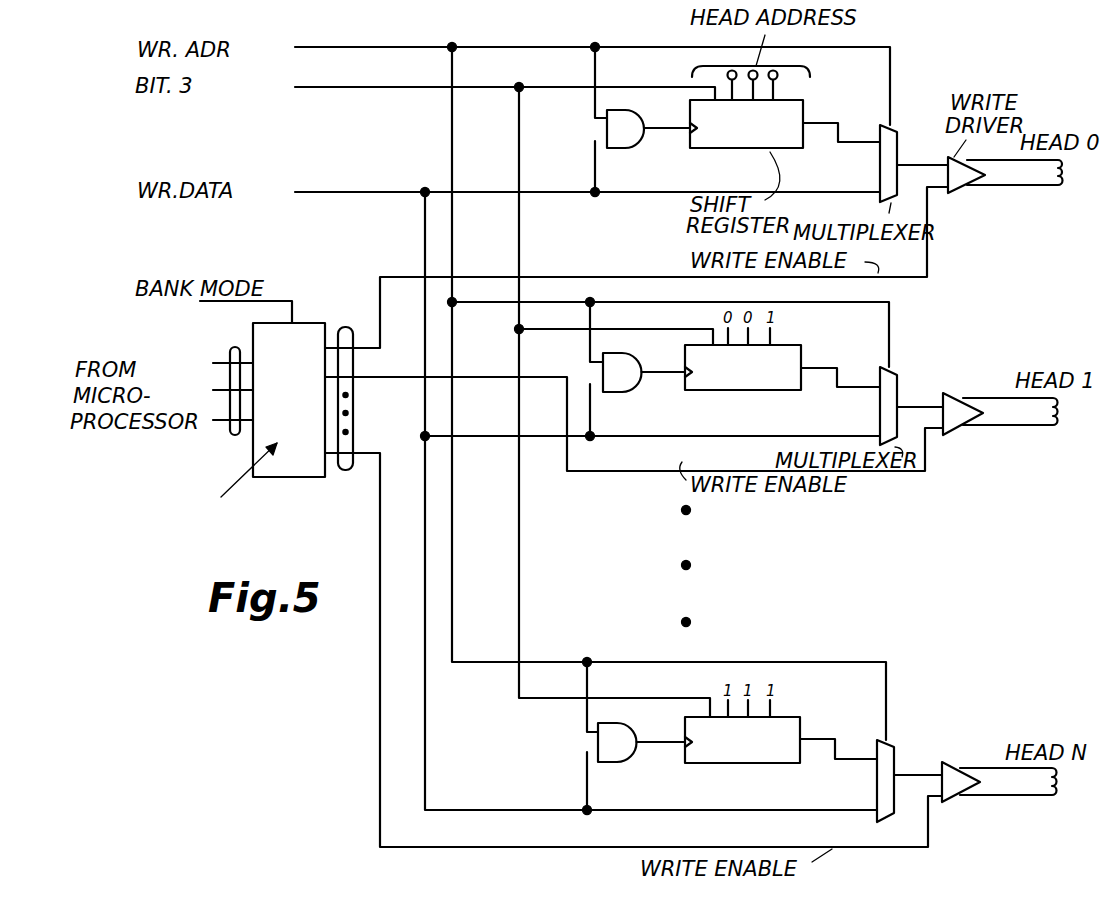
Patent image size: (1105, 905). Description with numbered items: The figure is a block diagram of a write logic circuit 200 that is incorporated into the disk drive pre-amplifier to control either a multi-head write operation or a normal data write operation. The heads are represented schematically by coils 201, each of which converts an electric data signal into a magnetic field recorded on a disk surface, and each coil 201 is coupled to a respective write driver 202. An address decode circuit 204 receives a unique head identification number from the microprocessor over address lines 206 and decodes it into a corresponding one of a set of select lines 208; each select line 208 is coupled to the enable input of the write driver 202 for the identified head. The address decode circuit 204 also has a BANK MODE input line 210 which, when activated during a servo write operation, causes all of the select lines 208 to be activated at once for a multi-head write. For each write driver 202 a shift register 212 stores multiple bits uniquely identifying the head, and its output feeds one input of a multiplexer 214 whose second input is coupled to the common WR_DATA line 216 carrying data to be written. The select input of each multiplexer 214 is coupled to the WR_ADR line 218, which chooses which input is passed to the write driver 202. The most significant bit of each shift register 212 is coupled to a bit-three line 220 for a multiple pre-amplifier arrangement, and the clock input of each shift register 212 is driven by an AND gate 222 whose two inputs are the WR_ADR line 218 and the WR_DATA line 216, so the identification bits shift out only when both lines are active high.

The write logic circuit 200 is at (492, 27).
The coil 201 is at (1062, 178).
The write driver 202 is at (949, 193).
The address decode circuit 204 is at (283, 478).
The address lines 206 is at (236, 436).
The select lines 208 is at (345, 327).
The BANK MODE input line 210 is at (278, 299).
The shift register 212 is at (800, 100).
The multiplexer 214 is at (880, 163).
The WR_DATA line 216 is at (318, 195).
The WR_ADR line 218 is at (305, 52).
The BIT_3 line 220 is at (310, 92).
The AND gate 222 is at (639, 113).